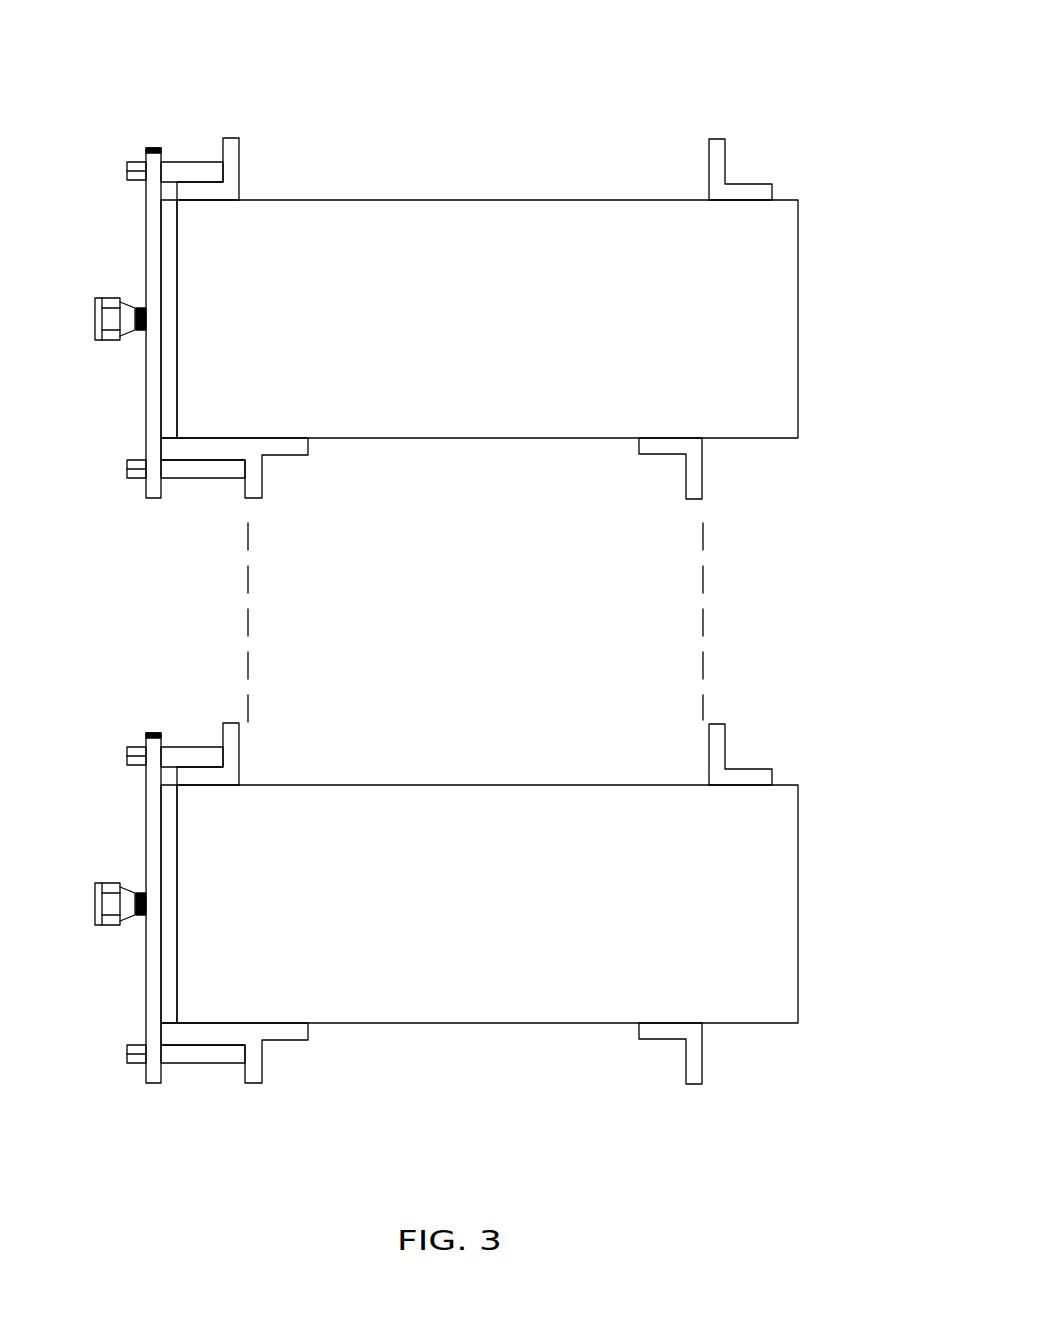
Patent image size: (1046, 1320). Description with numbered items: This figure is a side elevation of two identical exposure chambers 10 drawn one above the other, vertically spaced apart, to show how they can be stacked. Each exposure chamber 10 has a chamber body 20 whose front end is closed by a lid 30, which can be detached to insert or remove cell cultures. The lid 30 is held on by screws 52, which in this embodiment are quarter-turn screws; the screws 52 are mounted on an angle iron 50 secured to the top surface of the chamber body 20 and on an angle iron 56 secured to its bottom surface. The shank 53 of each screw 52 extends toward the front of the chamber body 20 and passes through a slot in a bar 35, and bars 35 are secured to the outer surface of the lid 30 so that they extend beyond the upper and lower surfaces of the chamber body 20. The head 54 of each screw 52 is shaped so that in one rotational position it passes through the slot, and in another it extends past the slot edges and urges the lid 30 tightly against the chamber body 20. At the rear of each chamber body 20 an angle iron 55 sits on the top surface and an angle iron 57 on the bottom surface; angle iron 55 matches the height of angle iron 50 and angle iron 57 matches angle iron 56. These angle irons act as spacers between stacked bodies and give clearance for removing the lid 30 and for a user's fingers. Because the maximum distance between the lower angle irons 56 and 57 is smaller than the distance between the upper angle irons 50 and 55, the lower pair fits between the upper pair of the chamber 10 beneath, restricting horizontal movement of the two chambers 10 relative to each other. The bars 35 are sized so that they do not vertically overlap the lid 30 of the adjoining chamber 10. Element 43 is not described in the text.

The exposure chamber 10 is at (653, 100).
The chamber body 20 is at (799, 325).
The lid 30 is at (178, 273).
The bar 35 is at (147, 255).
The knob 43 is at (110, 927).
The angle iron 50 is at (240, 150).
The screw 52 is at (193, 162).
The shank 53 is at (183, 472).
The head 54 is at (140, 160).
The angle iron 55 is at (726, 152).
The angle iron 56 is at (262, 490).
The angle iron 57 is at (702, 490).